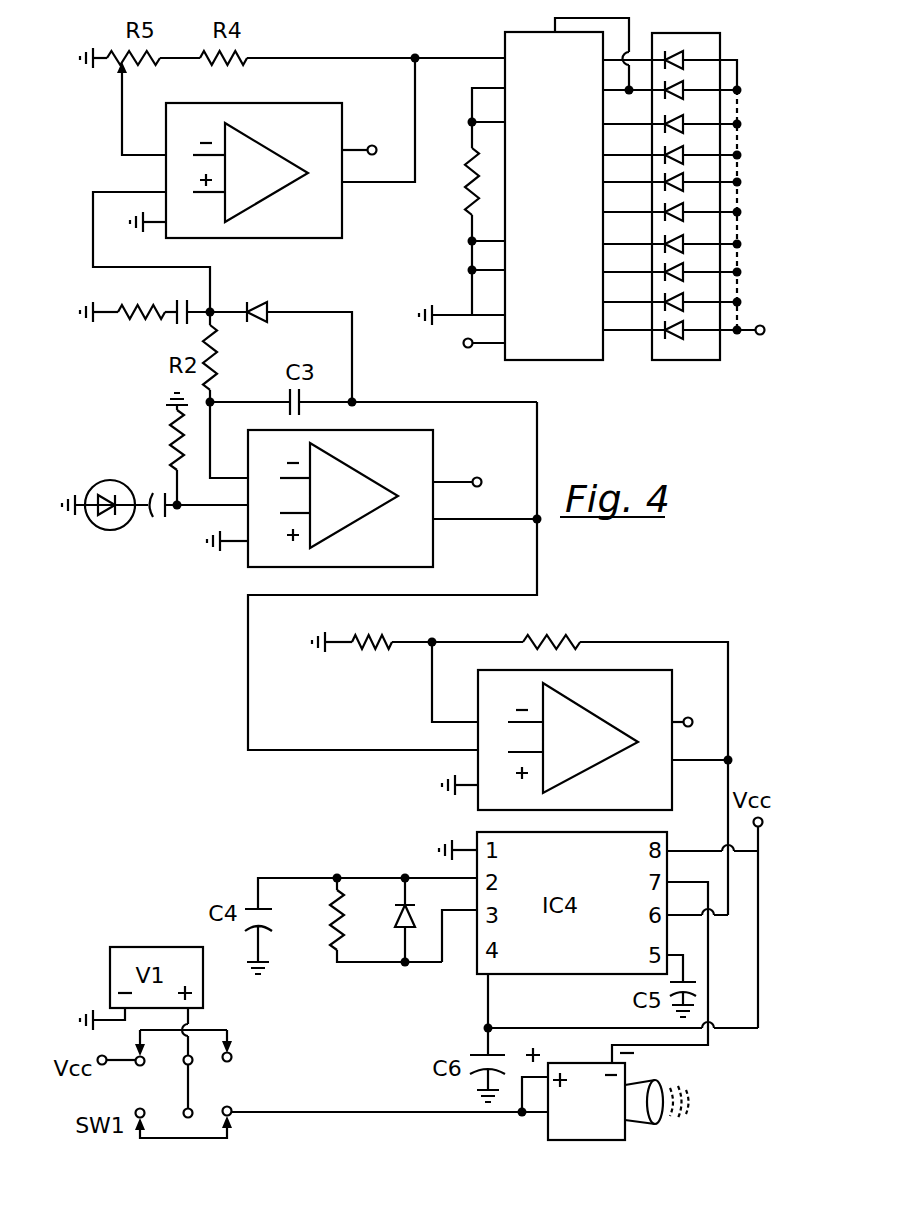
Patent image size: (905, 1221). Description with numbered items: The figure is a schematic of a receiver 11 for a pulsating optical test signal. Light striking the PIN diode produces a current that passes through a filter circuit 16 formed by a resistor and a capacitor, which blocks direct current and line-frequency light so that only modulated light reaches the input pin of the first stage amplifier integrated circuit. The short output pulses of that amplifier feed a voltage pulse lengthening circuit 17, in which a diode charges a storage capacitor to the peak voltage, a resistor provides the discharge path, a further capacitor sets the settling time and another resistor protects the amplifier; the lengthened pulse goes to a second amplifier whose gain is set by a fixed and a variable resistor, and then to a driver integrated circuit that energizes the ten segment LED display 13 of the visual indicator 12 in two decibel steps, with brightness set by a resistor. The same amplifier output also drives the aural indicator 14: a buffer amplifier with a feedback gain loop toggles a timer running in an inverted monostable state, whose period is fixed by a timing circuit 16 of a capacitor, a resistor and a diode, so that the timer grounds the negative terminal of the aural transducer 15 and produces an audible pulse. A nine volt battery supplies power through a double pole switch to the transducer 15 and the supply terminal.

The receiver 11 is at (190, 572).
The visual indicator 12 is at (496, 41).
The ten segment LED display 13 is at (717, 52).
The aural indicator 14 is at (750, 750).
The aural transducer 15 is at (612, 1125).
The filter circuit 16 is at (120, 458).
The voltage pulse lengthening circuit 17 is at (232, 266).